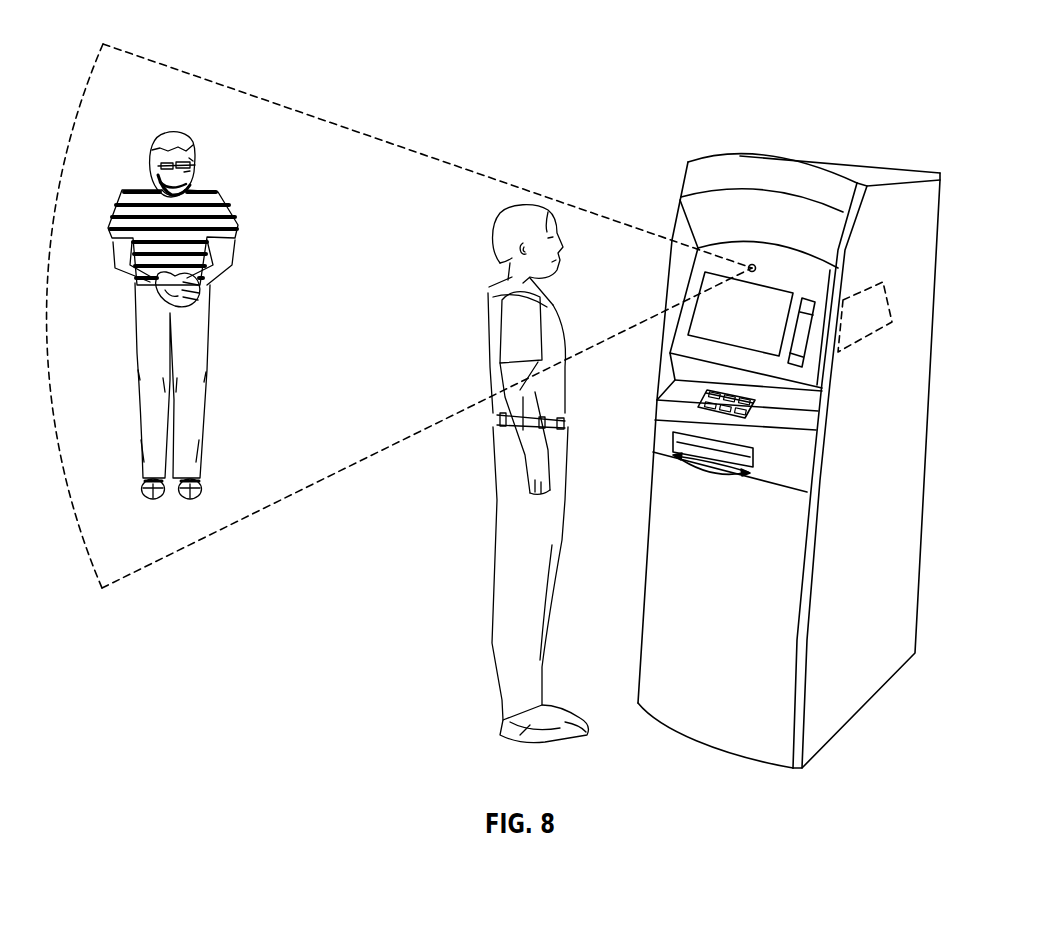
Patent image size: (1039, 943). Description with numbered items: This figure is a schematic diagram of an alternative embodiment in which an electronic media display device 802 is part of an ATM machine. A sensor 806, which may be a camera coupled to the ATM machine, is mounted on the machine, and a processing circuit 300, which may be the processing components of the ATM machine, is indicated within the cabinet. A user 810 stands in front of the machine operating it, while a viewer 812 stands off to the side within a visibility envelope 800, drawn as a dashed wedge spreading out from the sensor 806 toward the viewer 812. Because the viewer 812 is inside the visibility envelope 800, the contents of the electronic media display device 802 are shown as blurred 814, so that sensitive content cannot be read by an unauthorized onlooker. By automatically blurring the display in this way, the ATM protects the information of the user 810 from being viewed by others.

The visibility envelope 800 is at (403, 146).
The viewer 812 is at (238, 227).
The user 810 is at (489, 477).
The processing circuit 300 is at (878, 305).
The sensor 806 is at (754, 264).
The blurred contents 814 is at (736, 287).
The electronic media display device 802 is at (797, 366).